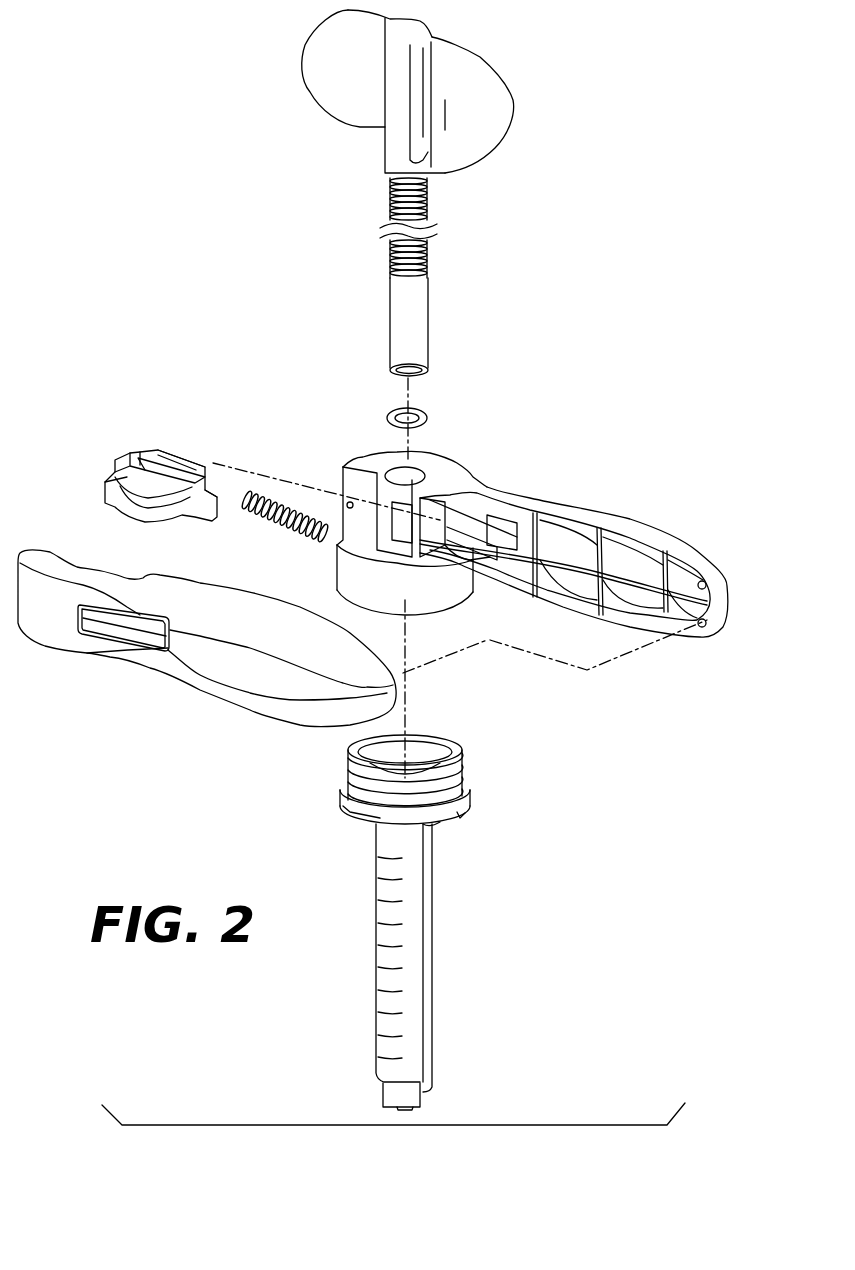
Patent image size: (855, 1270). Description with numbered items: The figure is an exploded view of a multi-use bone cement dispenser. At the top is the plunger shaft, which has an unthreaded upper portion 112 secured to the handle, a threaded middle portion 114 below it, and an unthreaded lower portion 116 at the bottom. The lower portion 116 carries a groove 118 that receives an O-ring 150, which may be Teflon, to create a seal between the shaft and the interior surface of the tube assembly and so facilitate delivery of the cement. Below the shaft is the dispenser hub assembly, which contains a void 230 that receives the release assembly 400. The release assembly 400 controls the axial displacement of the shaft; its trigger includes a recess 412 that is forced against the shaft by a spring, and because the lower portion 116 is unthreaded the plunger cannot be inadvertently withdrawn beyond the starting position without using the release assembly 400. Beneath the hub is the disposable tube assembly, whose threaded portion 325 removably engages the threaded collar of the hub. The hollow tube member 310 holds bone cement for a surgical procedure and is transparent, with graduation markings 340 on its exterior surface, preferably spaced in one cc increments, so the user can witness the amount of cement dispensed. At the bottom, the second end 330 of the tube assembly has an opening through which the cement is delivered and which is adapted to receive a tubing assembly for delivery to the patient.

The unthreaded upper portion 112 is at (385, 173).
The threaded middle portion 114 is at (427, 213).
The unthreaded lower portion 116 is at (400, 318).
The groove 118 is at (428, 372).
The O-ring 150 is at (387, 418).
The recess 412 is at (130, 457).
The release assembly 400 is at (101, 524).
The void 230 is at (420, 552).
The threaded portion 325 is at (467, 787).
The hollow tube member 310 is at (428, 937).
The graduation markings 340 is at (377, 1027).
The second end 330 is at (420, 1098).